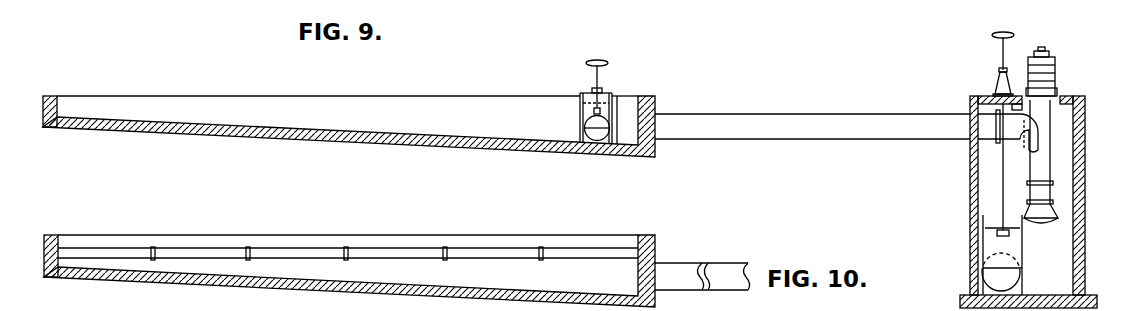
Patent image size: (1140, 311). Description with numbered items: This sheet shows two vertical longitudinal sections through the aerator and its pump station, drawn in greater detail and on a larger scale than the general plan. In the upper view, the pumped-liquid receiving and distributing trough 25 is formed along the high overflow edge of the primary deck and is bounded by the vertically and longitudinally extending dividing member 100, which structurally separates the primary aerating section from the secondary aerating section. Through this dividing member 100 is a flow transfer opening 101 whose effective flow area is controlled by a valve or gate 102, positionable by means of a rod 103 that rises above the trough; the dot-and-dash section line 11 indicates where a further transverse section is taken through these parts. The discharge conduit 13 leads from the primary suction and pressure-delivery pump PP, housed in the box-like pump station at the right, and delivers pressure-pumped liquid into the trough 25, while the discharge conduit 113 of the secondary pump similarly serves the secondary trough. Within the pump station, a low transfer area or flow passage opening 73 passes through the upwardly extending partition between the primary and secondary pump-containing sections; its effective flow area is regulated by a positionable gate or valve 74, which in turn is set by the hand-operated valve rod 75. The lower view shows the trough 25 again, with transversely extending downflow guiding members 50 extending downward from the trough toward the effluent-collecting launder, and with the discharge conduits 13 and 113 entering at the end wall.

In FIG. 9, the dividing member 100 is at (286, 96).
In FIG. 10, the dividing member 100 is at (428, 235).
In FIG. 9, the pumped-liquid receiving and distributing trough 25 is at (411, 115).
In FIG. 10, the pumped-liquid receiving and distributing trough 25 is at (485, 240).
In FIG. 9, the flow transfer opening 101 is at (585, 128).
In FIG. 9, the valve or gate 102 is at (598, 147).
In FIG. 9, the rod 103 is at (590, 62).
In FIG. 9, the section line 11- 11 is at (620, 62).
In FIG. 9, the discharge conduit 13 is at (787, 113).
In FIG. 10, the discharge conduit 13 is at (673, 264).
In FIG. 9, the discharge conduit 113 is at (700, 125).
In FIG. 10, the discharge conduit 113 is at (731, 265).
In FIG. 9, the primary suction and pressure-delivery pump PP is at (1045, 173).
In FIG. 9, the valve rod 75 is at (1011, 40).
In FIG. 9, the valve or gate 74 is at (1005, 252).
In FIG. 9, the flow passage opening 73 is at (1012, 292).
In FIG. 10, the downflow guiding members 50 is at (156, 247).